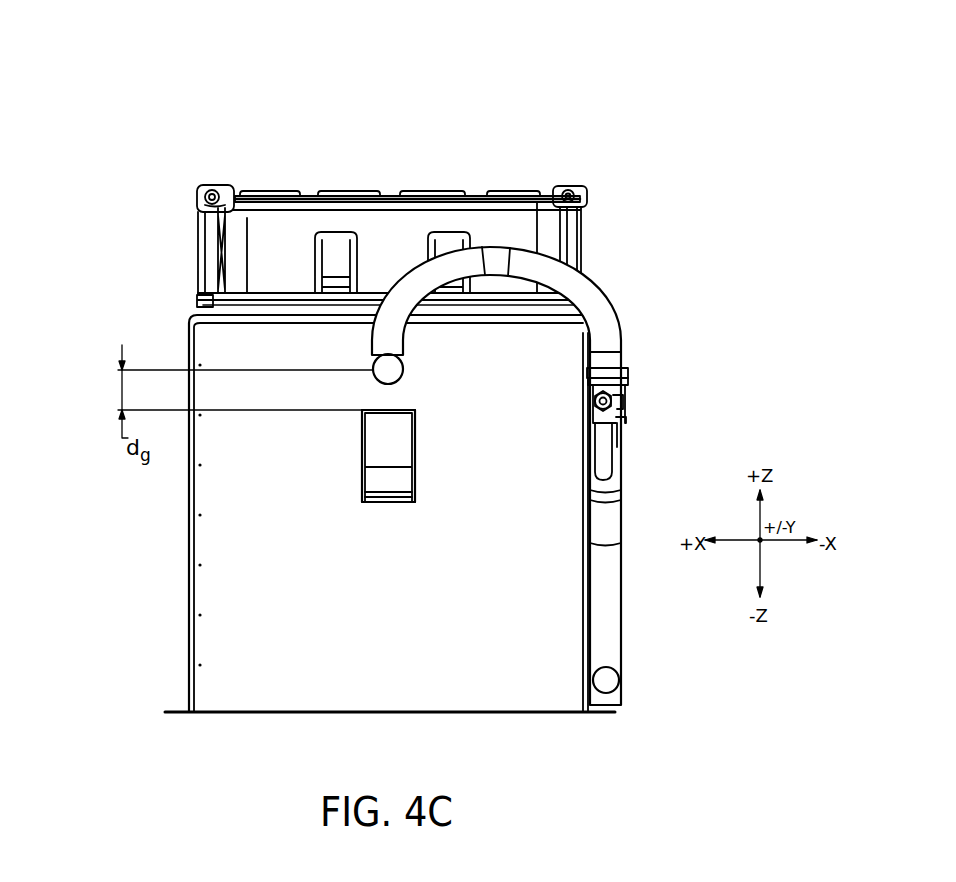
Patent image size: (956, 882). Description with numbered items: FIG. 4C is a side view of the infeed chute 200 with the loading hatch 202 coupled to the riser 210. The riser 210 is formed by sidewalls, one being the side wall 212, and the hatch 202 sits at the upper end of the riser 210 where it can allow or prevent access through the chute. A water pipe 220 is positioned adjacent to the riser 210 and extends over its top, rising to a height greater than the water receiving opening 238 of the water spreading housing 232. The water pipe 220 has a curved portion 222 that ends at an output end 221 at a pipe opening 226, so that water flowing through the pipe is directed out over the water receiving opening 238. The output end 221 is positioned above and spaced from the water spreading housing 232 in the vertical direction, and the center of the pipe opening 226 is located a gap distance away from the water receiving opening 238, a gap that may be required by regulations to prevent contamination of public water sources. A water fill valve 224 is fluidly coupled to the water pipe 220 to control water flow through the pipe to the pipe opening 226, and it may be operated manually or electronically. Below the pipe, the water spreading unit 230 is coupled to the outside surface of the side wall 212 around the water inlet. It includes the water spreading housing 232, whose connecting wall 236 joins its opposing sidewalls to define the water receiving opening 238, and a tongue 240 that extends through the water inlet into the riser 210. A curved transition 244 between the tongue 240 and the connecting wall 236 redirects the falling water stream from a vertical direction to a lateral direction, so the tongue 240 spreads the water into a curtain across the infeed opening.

The infeed chute 200 is at (341, 376).
The hatch 202 is at (334, 246).
The riser 210 is at (312, 513).
The side wall 212 is at (583, 655).
The water pipe 220 is at (513, 455).
The output end 221 is at (396, 332).
The curved portion 222 is at (587, 272).
The water fill valve 224 is at (615, 403).
The pipe opening 226 is at (373, 376).
The water spreading unit 230 is at (408, 491).
The water spreading housing 232 is at (447, 469).
The connecting wall 236 is at (415, 422).
The water receiving opening 238 is at (402, 410).
The tongue 240 is at (370, 503).
The transition 244 is at (362, 492).